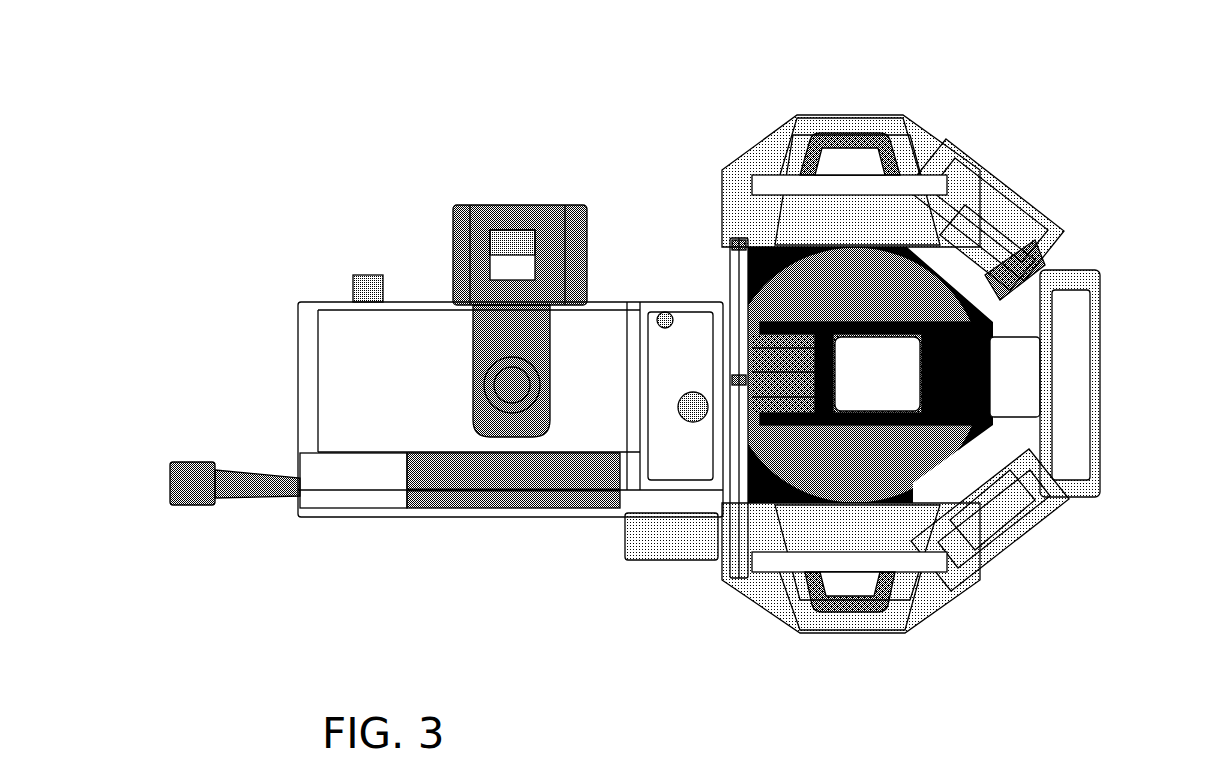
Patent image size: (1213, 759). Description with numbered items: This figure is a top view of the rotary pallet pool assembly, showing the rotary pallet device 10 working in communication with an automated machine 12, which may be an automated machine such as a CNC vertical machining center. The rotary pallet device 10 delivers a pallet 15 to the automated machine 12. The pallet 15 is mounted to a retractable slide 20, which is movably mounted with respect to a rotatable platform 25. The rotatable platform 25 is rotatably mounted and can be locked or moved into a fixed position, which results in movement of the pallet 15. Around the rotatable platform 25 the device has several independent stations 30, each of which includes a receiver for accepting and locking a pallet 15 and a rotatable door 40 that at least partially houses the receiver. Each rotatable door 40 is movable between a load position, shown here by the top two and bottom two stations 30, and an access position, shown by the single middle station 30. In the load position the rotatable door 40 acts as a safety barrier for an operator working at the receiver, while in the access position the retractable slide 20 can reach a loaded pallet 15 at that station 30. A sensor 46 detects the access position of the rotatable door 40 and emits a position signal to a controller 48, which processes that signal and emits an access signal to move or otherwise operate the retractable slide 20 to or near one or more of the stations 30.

The rotary pallet device 10 is at (964, 376).
The automated machine 12 is at (669, 127).
The pallet 15 is at (1040, 268).
The retractable slide 20 is at (912, 311).
The rotatable platform 25 is at (863, 463).
The station 30 is at (852, 108).
The rotatable door 40 is at (868, 213).
The sensor 46 is at (1022, 253).
The controller 48 is at (660, 537).